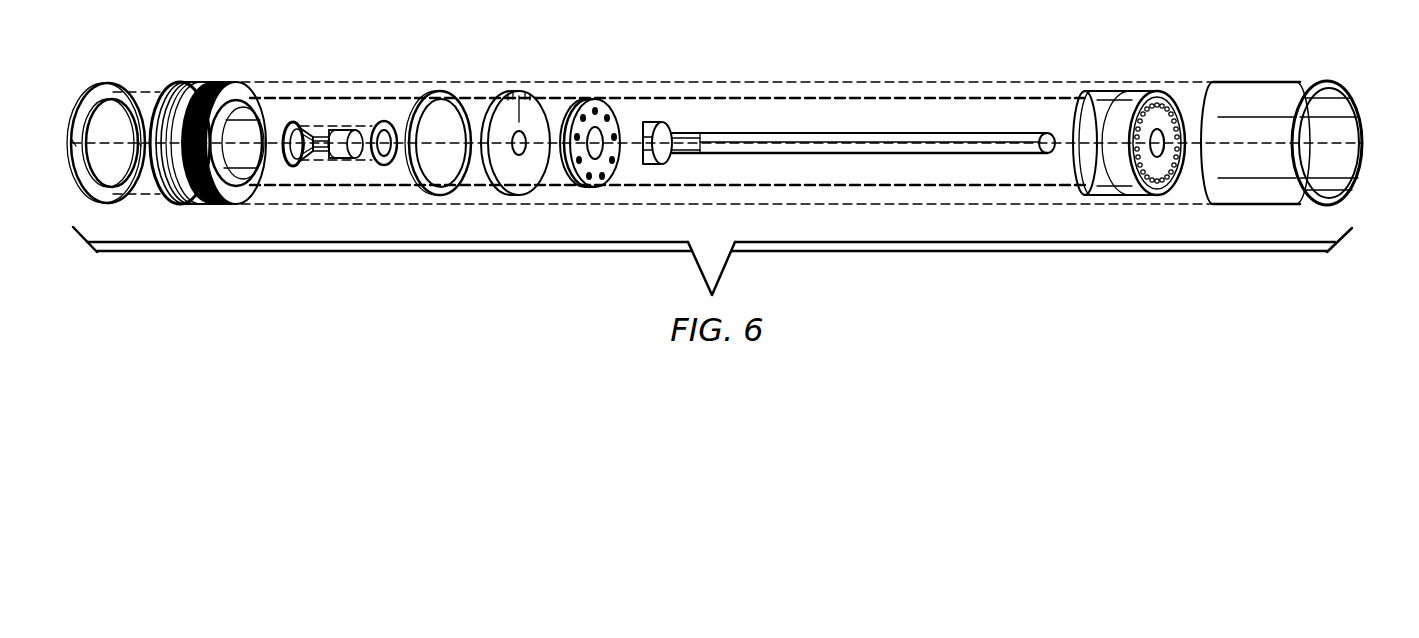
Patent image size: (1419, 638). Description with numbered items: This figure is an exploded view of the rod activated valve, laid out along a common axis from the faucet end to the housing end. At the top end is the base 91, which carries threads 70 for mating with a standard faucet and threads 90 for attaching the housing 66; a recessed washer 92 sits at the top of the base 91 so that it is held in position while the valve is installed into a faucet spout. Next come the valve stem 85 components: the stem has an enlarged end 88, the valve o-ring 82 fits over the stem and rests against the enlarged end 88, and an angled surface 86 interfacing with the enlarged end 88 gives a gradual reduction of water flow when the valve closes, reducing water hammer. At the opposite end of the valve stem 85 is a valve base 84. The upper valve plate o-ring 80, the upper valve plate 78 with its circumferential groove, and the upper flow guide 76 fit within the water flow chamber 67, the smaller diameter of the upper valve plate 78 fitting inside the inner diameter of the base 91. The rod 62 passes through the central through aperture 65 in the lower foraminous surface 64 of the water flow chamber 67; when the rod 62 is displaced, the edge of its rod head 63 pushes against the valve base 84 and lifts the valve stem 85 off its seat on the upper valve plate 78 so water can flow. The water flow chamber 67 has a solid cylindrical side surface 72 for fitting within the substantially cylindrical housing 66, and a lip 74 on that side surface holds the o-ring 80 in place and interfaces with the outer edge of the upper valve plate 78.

The rod 62 is at (842, 135).
The rod head 63 is at (648, 122).
The lower foraminous surface 64 is at (1178, 96).
The central through aperture 65 is at (1165, 150).
The housing 66 is at (1268, 82).
The water flow chamber 67 is at (1158, 55).
The threads 70 is at (187, 80).
The cylindrical side surface 72 is at (1137, 90).
The lip 74 is at (1098, 92).
The upper flow guide 76 is at (597, 186).
The upper valve plate 78 is at (530, 115).
The upper valve plate o-ring 80 is at (437, 97).
The valve o-ring 82 is at (387, 165).
The valve base 84 is at (345, 130).
The valve stem 85 is at (378, 48).
The angled surface 86 is at (306, 154).
The enlarged end 88 is at (297, 123).
The threads 90 is at (223, 197).
The base 91 is at (262, 52).
The recessed washer 92 is at (110, 90).